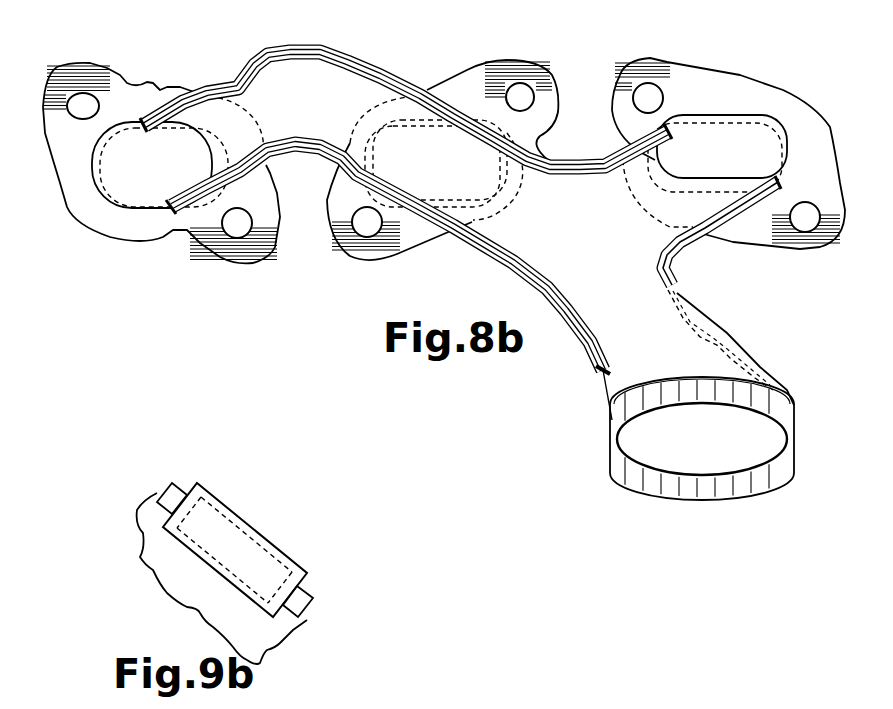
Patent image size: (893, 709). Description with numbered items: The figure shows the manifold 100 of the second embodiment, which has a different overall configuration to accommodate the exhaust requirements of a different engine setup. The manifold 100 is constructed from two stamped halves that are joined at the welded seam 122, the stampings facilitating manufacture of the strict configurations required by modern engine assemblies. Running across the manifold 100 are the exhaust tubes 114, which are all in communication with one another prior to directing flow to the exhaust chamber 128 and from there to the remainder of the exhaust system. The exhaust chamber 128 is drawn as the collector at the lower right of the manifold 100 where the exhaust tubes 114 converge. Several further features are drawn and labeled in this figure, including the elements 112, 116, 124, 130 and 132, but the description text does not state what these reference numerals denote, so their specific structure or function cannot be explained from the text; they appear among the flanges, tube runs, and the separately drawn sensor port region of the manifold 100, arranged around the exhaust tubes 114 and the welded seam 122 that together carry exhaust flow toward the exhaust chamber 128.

In FIG. 8b, the manifold 100 is at (343, 301).
In FIG. 8b, the tube end / locating tab 112 is at (625, 318).
In FIG. 9b, the tube end / locating tab 112 is at (300, 600).
In FIG. 8b, the exhaust tubes 114 is at (187, 173).
In FIG. 8b, the flange 116 is at (72, 143).
In FIG. 8b, the welded seam 122 is at (488, 251).
In FIG. 9b, the bracket 124 is at (297, 568).
In FIG. 8b, the exhaust chamber 128 is at (732, 449).
In FIG. 8b, the first runner tube 130 is at (242, 98).
In FIG. 8b, the second runner tube 132 is at (368, 87).